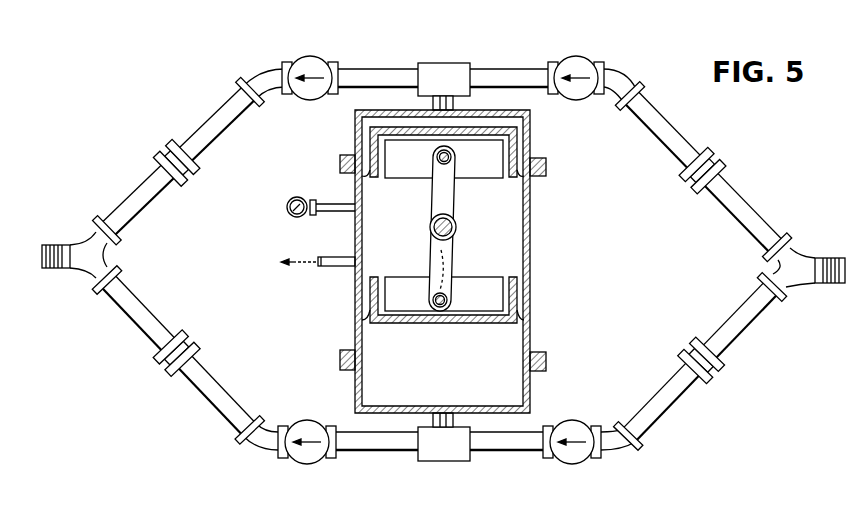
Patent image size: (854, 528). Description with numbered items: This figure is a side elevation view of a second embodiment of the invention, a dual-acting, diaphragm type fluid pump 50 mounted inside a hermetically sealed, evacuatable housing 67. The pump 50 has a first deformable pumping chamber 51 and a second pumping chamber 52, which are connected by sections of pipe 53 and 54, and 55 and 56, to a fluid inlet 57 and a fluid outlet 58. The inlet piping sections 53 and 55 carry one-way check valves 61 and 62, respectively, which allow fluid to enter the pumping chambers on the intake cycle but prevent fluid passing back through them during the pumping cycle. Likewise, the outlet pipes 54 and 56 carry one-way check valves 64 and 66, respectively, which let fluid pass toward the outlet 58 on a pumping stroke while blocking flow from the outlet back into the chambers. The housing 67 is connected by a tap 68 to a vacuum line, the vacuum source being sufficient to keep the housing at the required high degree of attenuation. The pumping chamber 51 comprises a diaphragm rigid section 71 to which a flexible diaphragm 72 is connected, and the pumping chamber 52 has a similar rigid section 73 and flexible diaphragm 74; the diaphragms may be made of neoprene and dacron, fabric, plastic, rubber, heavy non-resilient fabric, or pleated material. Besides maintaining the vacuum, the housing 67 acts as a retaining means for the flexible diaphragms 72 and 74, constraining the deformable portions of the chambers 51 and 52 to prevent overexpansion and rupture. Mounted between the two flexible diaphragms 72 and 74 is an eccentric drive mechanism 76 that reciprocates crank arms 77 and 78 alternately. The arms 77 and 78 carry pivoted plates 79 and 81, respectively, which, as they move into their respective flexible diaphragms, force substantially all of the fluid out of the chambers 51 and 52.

The fluid pump 50 is at (538, 274).
The first deformable pumping chamber 51 is at (534, 140).
The second pumping chamber 52 is at (537, 398).
The section of pipe 53 is at (520, 67).
The outlet pipe 54 is at (390, 67).
The section of pipe 55 is at (488, 458).
The outlet pipe 56 is at (352, 458).
The fluid inlet 57 is at (806, 286).
The fluid outlet 58 is at (82, 272).
The one-way check valve 61 is at (590, 58).
The one-way check valve 62 is at (583, 463).
The one-way check valve 64 is at (312, 57).
The one-way check valve 66 is at (301, 465).
The hermetically-sealed housing 67 is at (533, 315).
The tap 68 is at (328, 266).
The diaphragm rigid section 71 is at (544, 164).
The flexible diaphragm 72 is at (520, 128).
The rigid section 73 is at (539, 369).
The flexible diaphragm 74 is at (498, 325).
The eccentric drive mechanism 76 is at (456, 232).
The crank arm 77 is at (456, 200).
The crank arm 78 is at (458, 262).
The pivoted plate 79 is at (412, 145).
The pivoted plate 81 is at (432, 302).